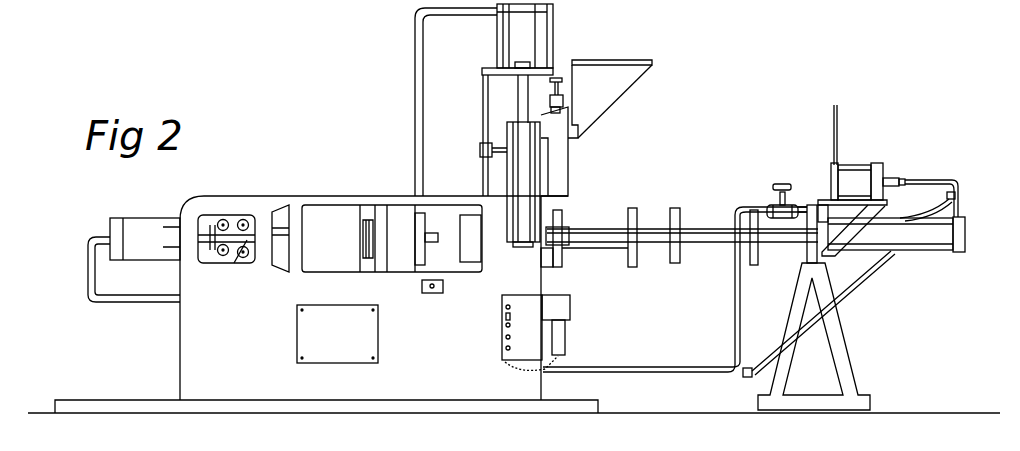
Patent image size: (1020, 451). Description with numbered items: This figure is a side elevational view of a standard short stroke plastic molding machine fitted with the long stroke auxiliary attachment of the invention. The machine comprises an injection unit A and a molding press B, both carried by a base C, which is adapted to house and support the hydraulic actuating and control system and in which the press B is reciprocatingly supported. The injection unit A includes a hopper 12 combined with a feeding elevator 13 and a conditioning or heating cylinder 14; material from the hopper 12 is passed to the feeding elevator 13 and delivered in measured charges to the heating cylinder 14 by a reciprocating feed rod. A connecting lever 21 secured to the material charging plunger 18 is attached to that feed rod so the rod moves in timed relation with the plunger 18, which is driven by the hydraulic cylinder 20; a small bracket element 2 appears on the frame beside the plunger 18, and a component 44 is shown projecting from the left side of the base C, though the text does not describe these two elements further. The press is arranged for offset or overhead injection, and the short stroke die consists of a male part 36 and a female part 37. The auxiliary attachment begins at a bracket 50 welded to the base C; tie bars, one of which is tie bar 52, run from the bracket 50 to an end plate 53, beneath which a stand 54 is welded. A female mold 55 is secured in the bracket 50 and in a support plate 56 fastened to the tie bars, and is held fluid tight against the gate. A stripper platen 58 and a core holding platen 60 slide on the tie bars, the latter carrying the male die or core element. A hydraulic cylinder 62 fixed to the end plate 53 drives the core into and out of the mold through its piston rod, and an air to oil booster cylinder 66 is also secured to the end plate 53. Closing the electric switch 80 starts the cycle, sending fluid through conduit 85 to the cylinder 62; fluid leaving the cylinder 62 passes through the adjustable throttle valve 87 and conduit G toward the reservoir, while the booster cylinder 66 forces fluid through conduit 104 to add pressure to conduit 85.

The bracket 2 is at (493, 135).
The hopper 12 is at (636, 75).
The feeding elevator 13 is at (564, 174).
The conditioning or heating cylinder 14 is at (539, 187).
The material charging plunger 18 is at (518, 101).
The cylinder 20 is at (551, 20).
The connecting lever 21 is at (549, 80).
The male part 36 is at (420, 253).
The female part 37 is at (466, 220).
The motor 44 is at (147, 227).
The bracket 50 is at (563, 263).
The tie bar 52 is at (712, 233).
The end plate 53 is at (813, 210).
The stand 54 is at (843, 359).
The female mold 55 is at (607, 247).
The support plate 56 is at (632, 210).
The stripper platen 58 is at (677, 261).
The core holding platen 60 is at (754, 267).
The hydraulic cylinder 62 is at (920, 245).
The air to oil booster cylinder 66 is at (855, 175).
The electric switch 80 is at (431, 293).
The conduit 85 is at (962, 206).
The adjustable throttle valve 87 is at (780, 207).
The conduit 104 is at (938, 178).
The injection unit A is at (587, 148).
The molding press B is at (432, 210).
The base C is at (238, 376).
The conduit G is at (735, 316).